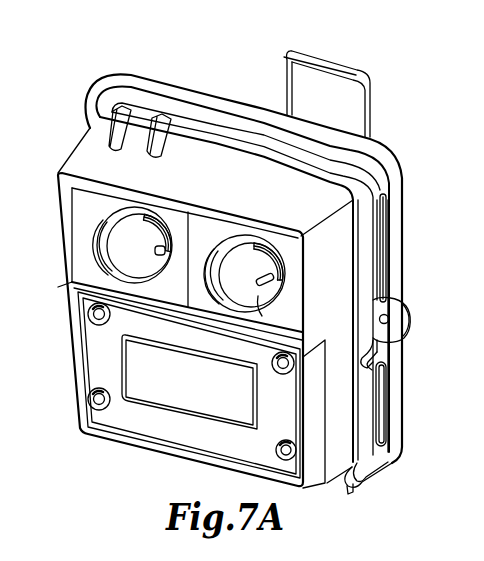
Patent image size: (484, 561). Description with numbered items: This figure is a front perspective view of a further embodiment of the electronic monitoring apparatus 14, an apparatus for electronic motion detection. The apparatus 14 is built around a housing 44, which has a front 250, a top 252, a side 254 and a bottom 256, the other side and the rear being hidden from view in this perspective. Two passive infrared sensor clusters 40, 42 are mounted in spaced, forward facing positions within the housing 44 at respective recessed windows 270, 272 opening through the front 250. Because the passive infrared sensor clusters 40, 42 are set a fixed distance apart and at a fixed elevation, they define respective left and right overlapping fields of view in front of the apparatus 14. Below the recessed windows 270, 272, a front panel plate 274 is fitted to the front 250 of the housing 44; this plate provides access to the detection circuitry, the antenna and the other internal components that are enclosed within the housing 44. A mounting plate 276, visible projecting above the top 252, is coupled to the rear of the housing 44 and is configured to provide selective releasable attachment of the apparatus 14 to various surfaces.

The electronic monitoring apparatus 14 is at (82, 84).
The top 252 is at (241, 190).
The side 254 is at (349, 278).
The front 250 is at (93, 240).
The recessed window 270 is at (132, 252).
The passive infrared sensor cluster 40 is at (146, 218).
The passive infrared sensor cluster 42 is at (244, 247).
The recessed window 272 is at (262, 316).
The bottom 256 is at (113, 437).
The front panel plate 274 is at (165, 425).
The housing 44 is at (335, 392).
The mounting plate 276 is at (372, 114).